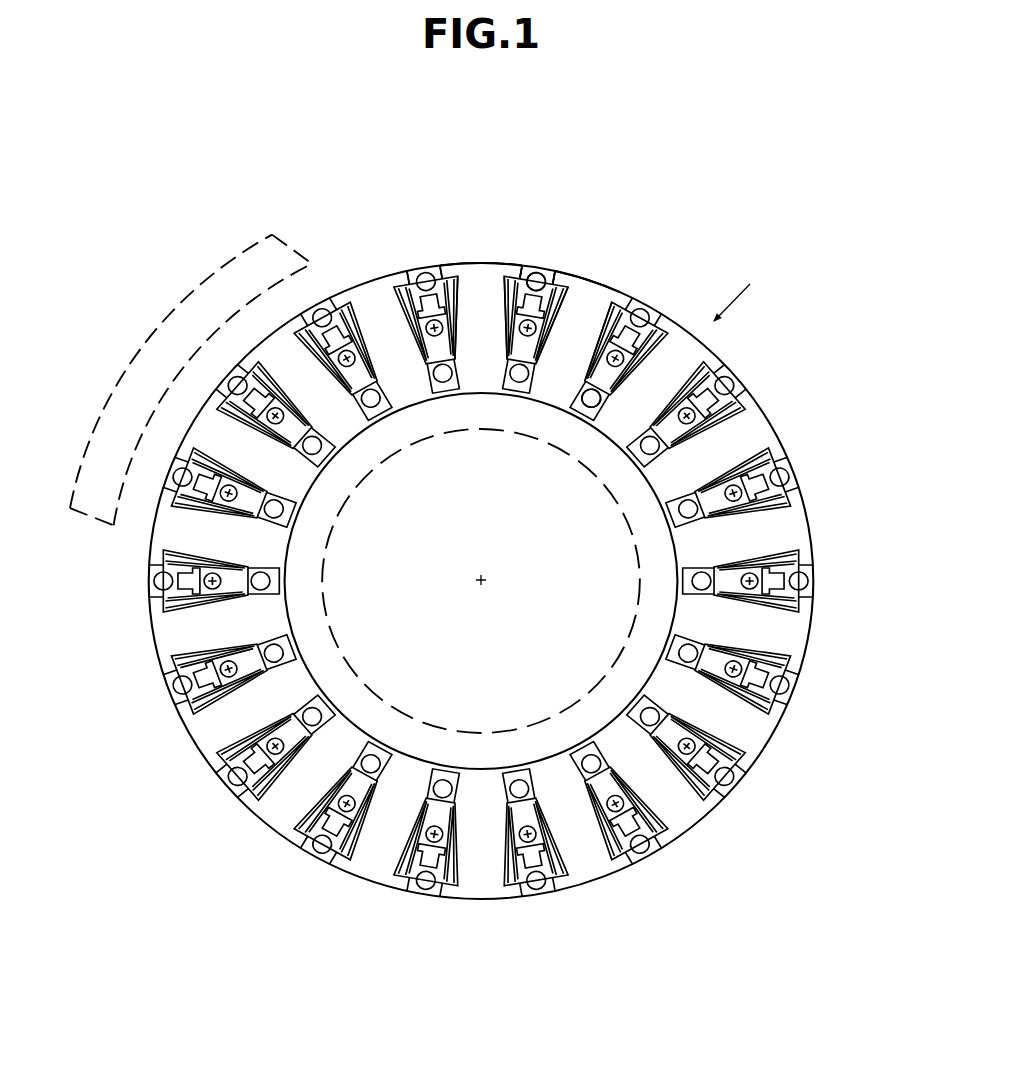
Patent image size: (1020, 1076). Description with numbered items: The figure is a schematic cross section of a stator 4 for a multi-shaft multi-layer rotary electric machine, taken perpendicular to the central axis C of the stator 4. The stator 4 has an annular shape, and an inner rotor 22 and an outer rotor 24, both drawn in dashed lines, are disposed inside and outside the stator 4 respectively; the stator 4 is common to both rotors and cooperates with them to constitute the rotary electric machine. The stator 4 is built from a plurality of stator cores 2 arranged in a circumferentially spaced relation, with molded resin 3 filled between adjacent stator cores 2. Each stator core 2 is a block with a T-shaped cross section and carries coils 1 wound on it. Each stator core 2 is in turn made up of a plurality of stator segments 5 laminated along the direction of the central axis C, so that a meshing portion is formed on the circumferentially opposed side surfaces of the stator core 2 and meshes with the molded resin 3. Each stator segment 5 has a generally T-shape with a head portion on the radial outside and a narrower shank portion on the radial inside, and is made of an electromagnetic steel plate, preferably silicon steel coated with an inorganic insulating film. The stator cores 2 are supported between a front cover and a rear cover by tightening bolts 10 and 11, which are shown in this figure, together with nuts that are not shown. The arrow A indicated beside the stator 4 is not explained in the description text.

The coils 1 is at (453, 262).
The stator core 2 is at (480, 254).
The molded resin 3 is at (531, 262).
The stator 4 is at (450, 195).
The stator segment 5 is at (493, 273).
The tightening bolt 10 is at (648, 303).
The tightening bolt 11 is at (601, 399).
The inner rotor 22 is at (484, 430).
The outer rotor 24 is at (218, 263).
The rotation direction A is at (736, 292).
The central axis C is at (491, 574).